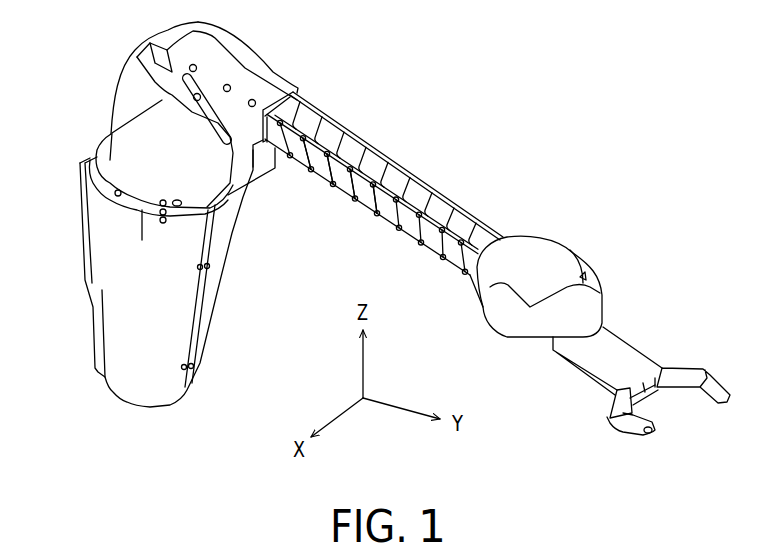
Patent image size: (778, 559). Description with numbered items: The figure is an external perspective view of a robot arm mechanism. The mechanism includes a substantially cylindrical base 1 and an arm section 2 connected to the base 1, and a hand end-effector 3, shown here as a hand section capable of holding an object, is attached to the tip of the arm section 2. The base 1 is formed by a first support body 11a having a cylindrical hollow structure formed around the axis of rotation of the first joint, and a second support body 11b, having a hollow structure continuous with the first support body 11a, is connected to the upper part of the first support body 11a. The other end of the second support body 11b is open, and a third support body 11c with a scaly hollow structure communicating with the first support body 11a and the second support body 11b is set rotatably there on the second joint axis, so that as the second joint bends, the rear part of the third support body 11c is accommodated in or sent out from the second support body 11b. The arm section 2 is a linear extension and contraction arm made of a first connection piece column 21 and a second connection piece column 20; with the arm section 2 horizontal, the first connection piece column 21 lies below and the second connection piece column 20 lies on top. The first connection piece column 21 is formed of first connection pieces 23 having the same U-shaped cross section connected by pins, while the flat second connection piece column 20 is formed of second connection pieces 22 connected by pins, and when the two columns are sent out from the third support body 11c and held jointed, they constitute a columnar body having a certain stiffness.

The base 1 is at (74, 319).
The arm section 2 is at (325, 77).
The hand end-effector 3 is at (637, 337).
The first support body 11a is at (98, 240).
The second support body 11b is at (116, 95).
The third support body 11c is at (258, 50).
The second connection piece column 20 is at (437, 188).
The first connection piece column 21 is at (363, 212).
The second connection piece 22 is at (373, 158).
The first connection piece 23 is at (322, 173).